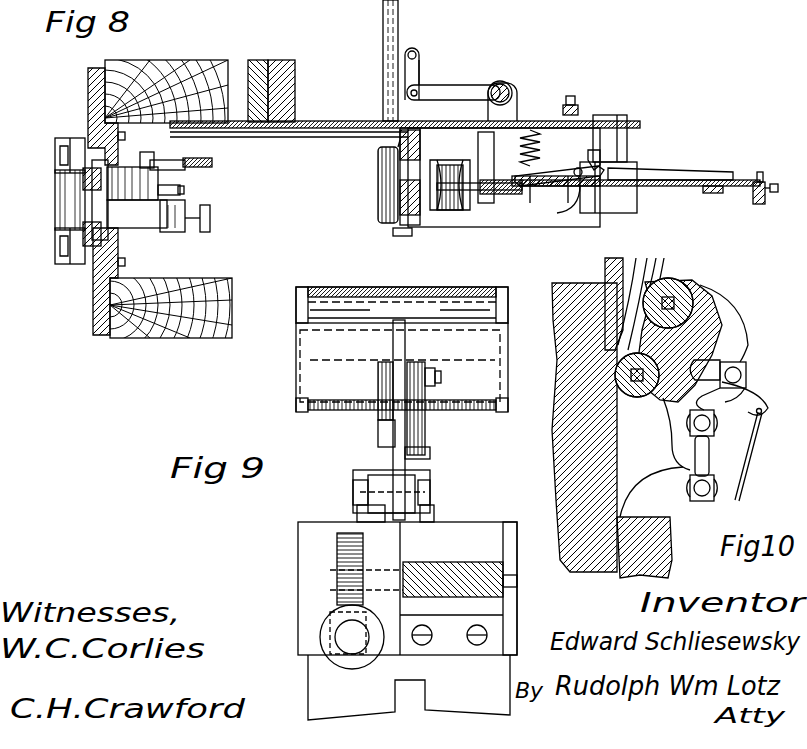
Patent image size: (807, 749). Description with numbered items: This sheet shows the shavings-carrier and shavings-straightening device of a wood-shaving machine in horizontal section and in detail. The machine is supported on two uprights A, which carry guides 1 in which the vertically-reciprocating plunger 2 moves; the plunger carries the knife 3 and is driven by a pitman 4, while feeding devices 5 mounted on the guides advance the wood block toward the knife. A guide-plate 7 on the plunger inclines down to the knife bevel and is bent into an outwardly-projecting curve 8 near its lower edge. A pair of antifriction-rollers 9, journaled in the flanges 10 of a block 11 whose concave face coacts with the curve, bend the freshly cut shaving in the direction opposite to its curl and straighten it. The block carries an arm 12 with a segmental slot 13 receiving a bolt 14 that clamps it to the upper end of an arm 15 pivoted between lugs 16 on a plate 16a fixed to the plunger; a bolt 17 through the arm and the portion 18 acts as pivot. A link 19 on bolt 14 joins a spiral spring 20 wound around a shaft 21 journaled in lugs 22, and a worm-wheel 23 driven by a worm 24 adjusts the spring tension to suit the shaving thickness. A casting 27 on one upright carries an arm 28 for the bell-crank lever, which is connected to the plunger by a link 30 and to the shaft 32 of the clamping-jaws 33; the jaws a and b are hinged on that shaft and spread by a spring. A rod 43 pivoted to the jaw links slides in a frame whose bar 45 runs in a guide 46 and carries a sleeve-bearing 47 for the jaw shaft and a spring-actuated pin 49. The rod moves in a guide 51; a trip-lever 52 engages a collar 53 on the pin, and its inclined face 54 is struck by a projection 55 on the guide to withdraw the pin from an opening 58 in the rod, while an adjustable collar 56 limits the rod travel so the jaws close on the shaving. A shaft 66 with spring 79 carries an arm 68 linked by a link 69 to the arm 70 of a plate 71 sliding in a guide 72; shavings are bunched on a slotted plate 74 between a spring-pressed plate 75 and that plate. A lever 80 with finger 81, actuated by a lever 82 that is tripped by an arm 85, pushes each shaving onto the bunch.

In FIG. 8, the guides 1 is at (85, 142).
In FIG. 8, the plunger 2 is at (100, 220).
In FIG. 9, the plunger 2 is at (469, 682).
In FIG. 10, the knife 3 is at (605, 264).
In FIG. 8, the pitman 4 is at (60, 195).
In FIG. 8, the feeding devices 5 is at (62, 182).
In FIG. 10, the guide-plate 7 is at (645, 262).
In FIG. 10, the outwardly-projecting curve 8 is at (627, 335).
In FIG. 9, the antifriction-rollers 9 is at (324, 296).
In FIG. 10, the antifriction-rollers 9 is at (686, 293).
In FIG. 9, the flanges 10 is at (300, 295).
In FIG. 10, the flanges 10 is at (695, 307).
In FIG. 9, the block 11 is at (400, 366).
In FIG. 10, the block 11 is at (692, 338).
In FIG. 9, the arm 12 is at (405, 342).
In FIG. 10, the arm 12 is at (707, 350).
In FIG. 10, the segmental slot 13 is at (708, 364).
In FIG. 9, the bolt 14 is at (437, 375).
In FIG. 10, the bolt 14 is at (746, 374).
In FIG. 9, the arm 15 is at (385, 407).
In FIG. 10, the arm 15 is at (695, 452).
In FIG. 9, the lugs 16 is at (358, 478).
In FIG. 10, the lugs 16 is at (668, 492).
In FIG. 9, the plate 16a is at (453, 522).
In FIG. 10, the plate 16a is at (665, 521).
In FIG. 9, the bolt 17 is at (378, 437).
In FIG. 10, the bolt 17 is at (714, 425).
In FIG. 10, the portion of arm 18 is at (714, 395).
In FIG. 9, the link 19 is at (418, 410).
In FIG. 10, the link 19 is at (758, 397).
In FIG. 9, the spiral spring 20 is at (430, 453).
In FIG. 10, the spiral spring 20 is at (740, 485).
In FIG. 9, the shaft 21 is at (519, 579).
In FIG. 9, the lugs 22 is at (397, 608).
In FIG. 8, the worm-wheel 23 is at (167, 226).
In FIG. 9, the worm-wheel 23 is at (338, 570).
In FIG. 8, the worm 24 is at (210, 216).
In FIG. 9, the worm 24 is at (337, 623).
In FIG. 8, the casting 27 is at (257, 60).
In FIG. 8, the arm 28 is at (297, 75).
In FIG. 8, the link 30 is at (212, 162).
In FIG. 8, the shaft 32 is at (400, 143).
In FIG. 8, the clamping-jaws 33 is at (371, 185).
In FIG. 8, the rod 43 is at (684, 178).
In FIG. 8, the bar 45 is at (522, 115).
In FIG. 8, the guide 46 is at (598, 118).
In FIG. 8, the sleeve-bearing 47 is at (420, 143).
In FIG. 8, the spring-actuated pin 49 is at (501, 167).
In FIG. 8, the guide 51 is at (568, 180).
In FIG. 8, the trip-lever 52 is at (545, 178).
In FIG. 8, the collar 53 is at (541, 160).
In FIG. 8, the inclined face 54 is at (606, 158).
In FIG. 8, the projection 55 is at (600, 152).
In FIG. 8, the adjustable collar 56 is at (758, 205).
In FIG. 8, the opening 58 is at (530, 180).
In FIG. 8, the shaft 66 is at (503, 83).
In FIG. 8, the arm 68 is at (460, 90).
In FIG. 8, the link 69 is at (440, 85).
In FIG. 8, the arm 70 is at (410, 52).
In FIG. 8, the plate 71 is at (385, 50).
In FIG. 8, the guide 72 is at (383, 12).
In FIG. 8, the slotted plate 74 is at (637, 218).
In FIG. 8, the plate 75 is at (586, 208).
In FIG. 8, the spring 79 is at (520, 92).
In FIG. 8, the lever 80 is at (401, 236).
In FIG. 8, the finger 81 is at (414, 232).
In FIG. 8, the lever 82 is at (572, 105).
In FIG. 8, the arm 85 is at (712, 193).
In FIG. 8, the uprights A is at (210, 61).
In FIG. 8, the jaw a is at (380, 170).
In FIG. 8, the jaw b is at (476, 196).
In FIG. 10, the jaw b is at (555, 436).